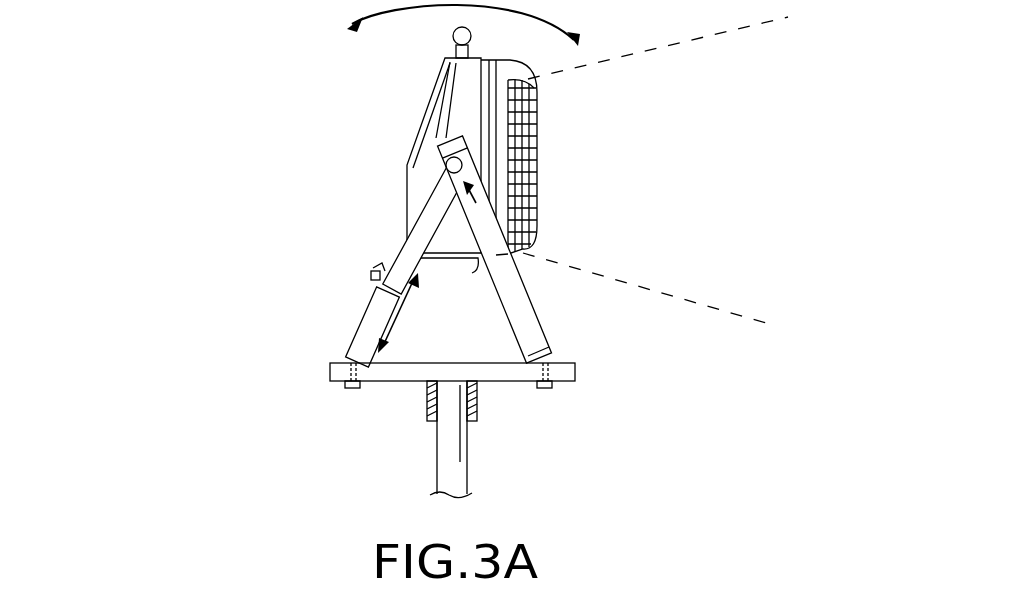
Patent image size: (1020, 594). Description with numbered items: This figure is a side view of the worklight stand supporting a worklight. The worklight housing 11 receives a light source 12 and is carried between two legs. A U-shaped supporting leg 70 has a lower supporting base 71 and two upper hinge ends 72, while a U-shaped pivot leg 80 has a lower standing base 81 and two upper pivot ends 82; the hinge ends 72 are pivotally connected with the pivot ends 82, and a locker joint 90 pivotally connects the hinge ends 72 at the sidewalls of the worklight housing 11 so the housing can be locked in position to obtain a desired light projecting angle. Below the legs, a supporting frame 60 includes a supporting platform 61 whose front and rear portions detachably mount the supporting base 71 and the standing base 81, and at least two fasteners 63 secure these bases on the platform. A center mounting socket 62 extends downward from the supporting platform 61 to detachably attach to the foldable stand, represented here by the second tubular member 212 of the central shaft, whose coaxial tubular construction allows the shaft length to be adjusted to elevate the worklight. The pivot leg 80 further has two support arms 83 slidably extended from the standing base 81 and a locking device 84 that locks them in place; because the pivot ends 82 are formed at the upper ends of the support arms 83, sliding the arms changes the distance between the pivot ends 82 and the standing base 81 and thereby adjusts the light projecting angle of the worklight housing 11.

The worklight housing 11 is at (463, 95).
The light source 12 is at (532, 148).
The supporting frame 60 is at (622, 490).
The supporting platform 61 is at (508, 382).
The center mounting socket 62 is at (477, 410).
The fasteners 63 is at (344, 386).
The supporting leg 70 is at (722, 250).
The supporting base 71 is at (550, 353).
The hinge ends 72 is at (523, 228).
The pivot leg 80 is at (160, 165).
The standing base 81 is at (357, 352).
The pivot ends 82 is at (432, 180).
The support arms 83 is at (398, 263).
The locking device 84 is at (372, 275).
The locker joint 90 is at (440, 135).
The second tubular member 212 is at (450, 452).